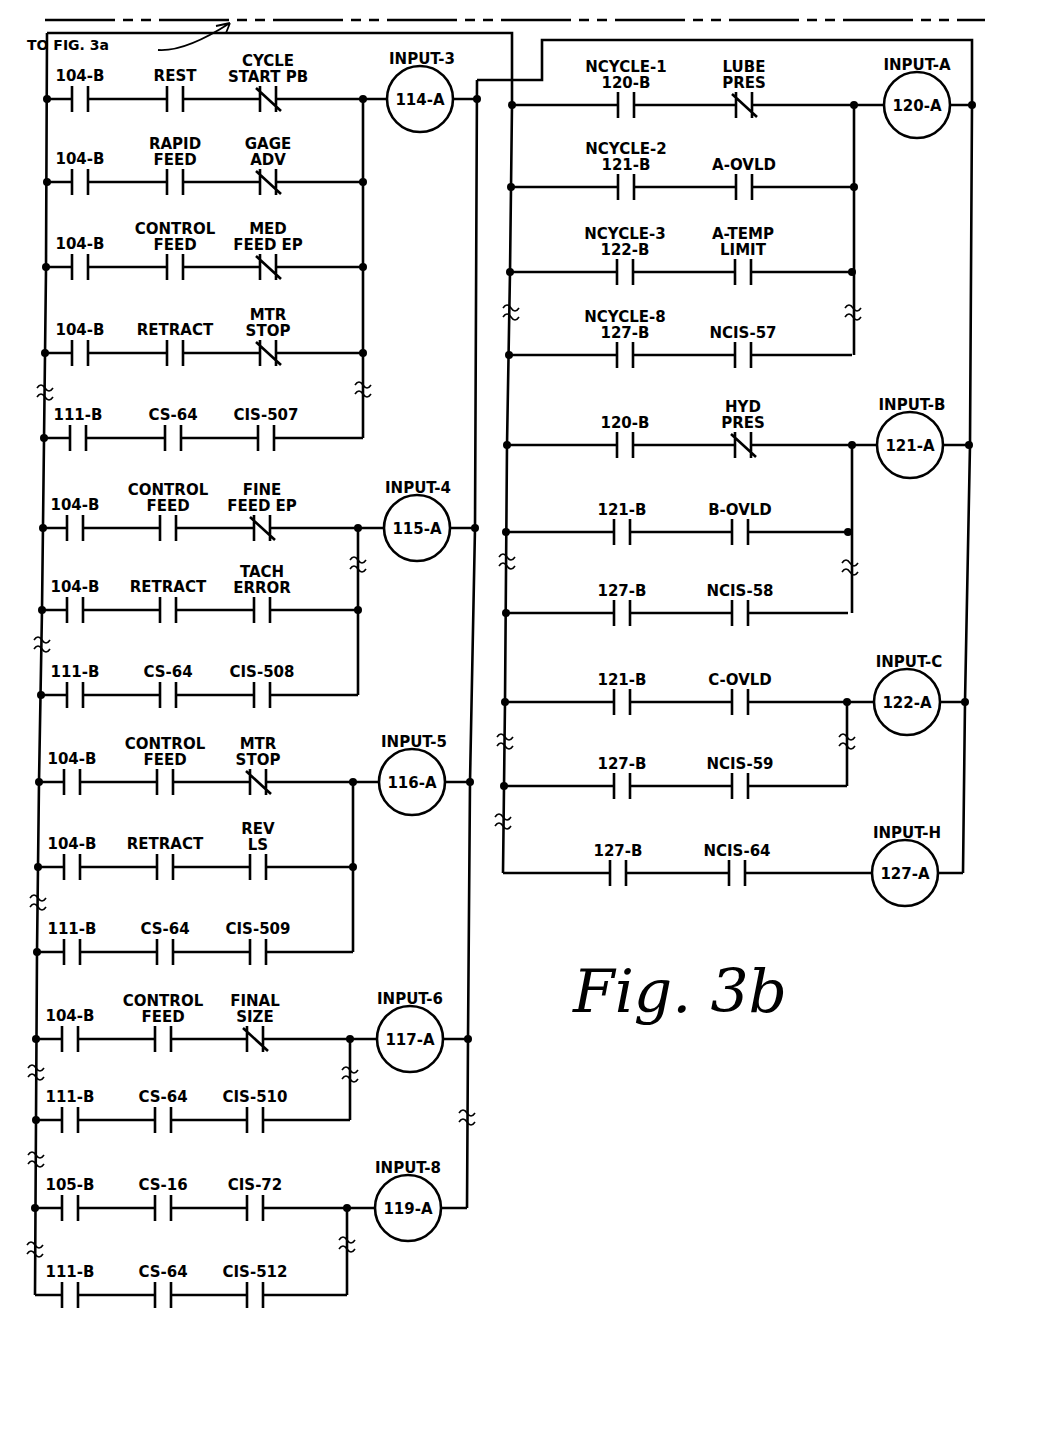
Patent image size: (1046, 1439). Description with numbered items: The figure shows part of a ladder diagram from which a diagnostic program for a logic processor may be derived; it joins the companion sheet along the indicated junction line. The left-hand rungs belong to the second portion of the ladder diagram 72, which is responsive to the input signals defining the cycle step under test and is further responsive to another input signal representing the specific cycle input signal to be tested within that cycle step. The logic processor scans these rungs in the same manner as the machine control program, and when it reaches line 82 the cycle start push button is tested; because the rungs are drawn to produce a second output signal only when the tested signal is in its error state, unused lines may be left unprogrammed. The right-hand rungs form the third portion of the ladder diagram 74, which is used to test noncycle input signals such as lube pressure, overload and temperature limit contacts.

The line 82 is at (318, 100).
The second portion of the ladder diagram 72 is at (418, 689).
The third portion of the ladder diagram 74 is at (917, 616).